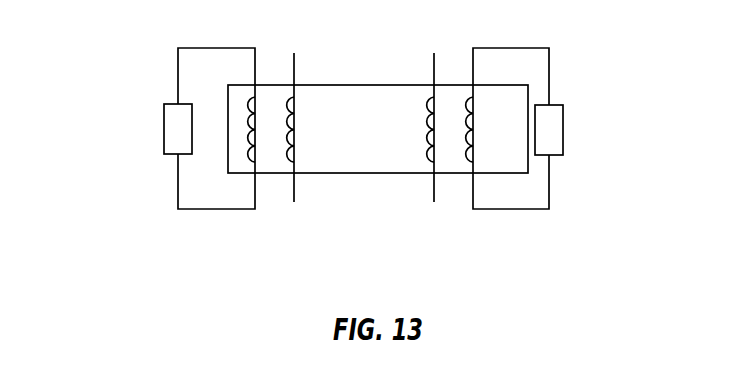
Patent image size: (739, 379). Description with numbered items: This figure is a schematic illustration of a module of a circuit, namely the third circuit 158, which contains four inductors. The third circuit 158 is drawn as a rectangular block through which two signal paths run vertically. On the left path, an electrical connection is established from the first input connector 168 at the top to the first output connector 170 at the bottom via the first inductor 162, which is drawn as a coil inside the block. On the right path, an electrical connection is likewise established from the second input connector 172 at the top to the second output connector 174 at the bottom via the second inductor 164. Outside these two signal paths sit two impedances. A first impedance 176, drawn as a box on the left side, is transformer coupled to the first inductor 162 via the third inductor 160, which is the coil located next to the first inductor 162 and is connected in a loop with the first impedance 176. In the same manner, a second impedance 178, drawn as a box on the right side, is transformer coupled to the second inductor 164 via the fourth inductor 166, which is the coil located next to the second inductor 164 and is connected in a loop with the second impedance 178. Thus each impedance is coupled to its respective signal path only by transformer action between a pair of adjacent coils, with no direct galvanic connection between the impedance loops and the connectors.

The third circuit 158 is at (350, 85).
The third inductor 160 is at (245, 107).
The first inductor 162 is at (287, 113).
The second inductor 164 is at (427, 113).
The fourth inductor 166 is at (467, 112).
The first input connector 168 is at (295, 78).
The first output connector 170 is at (294, 201).
The second input connector 172 is at (433, 78).
The second output connector 174 is at (434, 201).
The first impedance 176 is at (180, 130).
The second impedance 178 is at (558, 129).